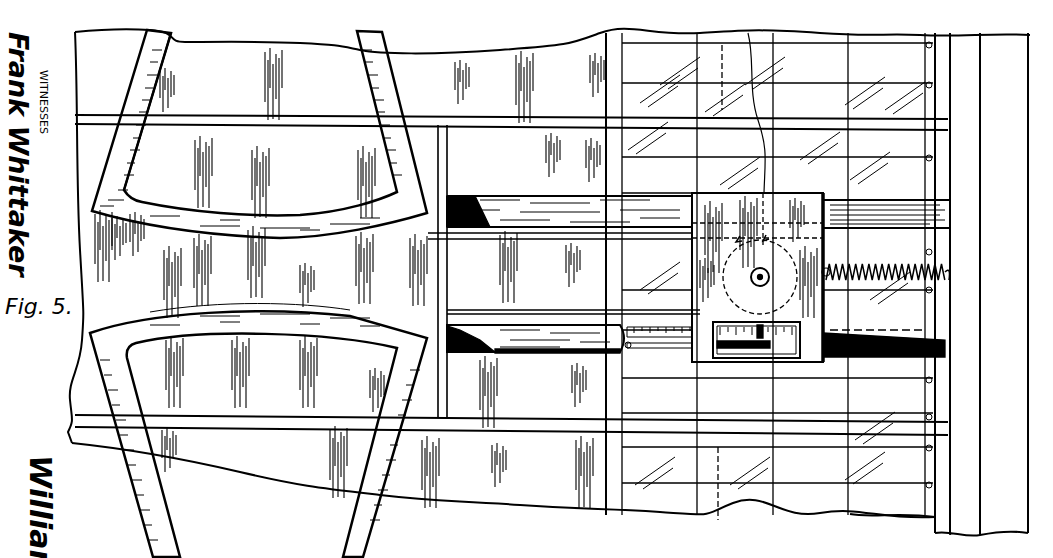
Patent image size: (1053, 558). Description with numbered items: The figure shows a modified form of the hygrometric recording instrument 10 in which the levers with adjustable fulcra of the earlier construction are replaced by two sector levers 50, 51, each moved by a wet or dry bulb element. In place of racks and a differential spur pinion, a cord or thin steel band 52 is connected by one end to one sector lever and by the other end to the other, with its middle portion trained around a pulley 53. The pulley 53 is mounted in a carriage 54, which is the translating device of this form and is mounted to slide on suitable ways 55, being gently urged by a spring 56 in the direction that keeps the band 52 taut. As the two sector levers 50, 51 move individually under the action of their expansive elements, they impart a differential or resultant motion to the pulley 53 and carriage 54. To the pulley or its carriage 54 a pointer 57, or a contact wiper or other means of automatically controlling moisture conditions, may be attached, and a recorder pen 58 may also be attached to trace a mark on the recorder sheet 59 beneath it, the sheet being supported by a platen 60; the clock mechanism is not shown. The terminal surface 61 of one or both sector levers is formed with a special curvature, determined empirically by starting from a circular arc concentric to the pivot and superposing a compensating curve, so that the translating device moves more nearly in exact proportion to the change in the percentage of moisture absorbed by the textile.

The board 10 is at (600, 450).
The sector lever 50 is at (382, 42).
The sector lever 51 is at (366, 527).
The cord or thin steel band 52 is at (160, 315).
The pulley 53 is at (735, 291).
The carriage 54 is at (820, 193).
The ways 55 is at (571, 197).
The spring 56 is at (892, 286).
The pointer 57 is at (756, 336).
The recorder pen 58 is at (757, 285).
The recorder sheet 59 is at (889, 507).
The platen 60 is at (754, 338).
The terminal surface 61 is at (392, 234).